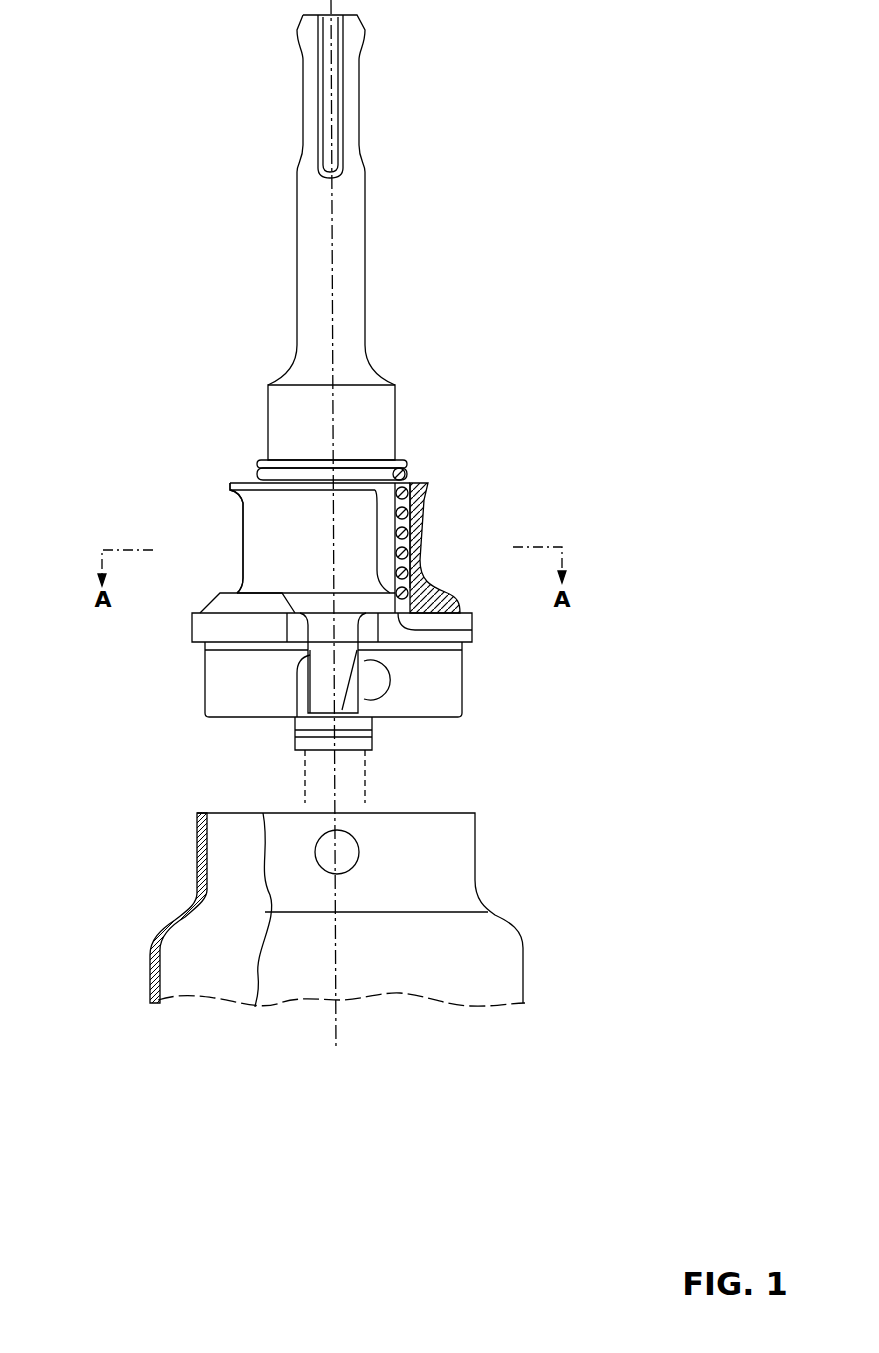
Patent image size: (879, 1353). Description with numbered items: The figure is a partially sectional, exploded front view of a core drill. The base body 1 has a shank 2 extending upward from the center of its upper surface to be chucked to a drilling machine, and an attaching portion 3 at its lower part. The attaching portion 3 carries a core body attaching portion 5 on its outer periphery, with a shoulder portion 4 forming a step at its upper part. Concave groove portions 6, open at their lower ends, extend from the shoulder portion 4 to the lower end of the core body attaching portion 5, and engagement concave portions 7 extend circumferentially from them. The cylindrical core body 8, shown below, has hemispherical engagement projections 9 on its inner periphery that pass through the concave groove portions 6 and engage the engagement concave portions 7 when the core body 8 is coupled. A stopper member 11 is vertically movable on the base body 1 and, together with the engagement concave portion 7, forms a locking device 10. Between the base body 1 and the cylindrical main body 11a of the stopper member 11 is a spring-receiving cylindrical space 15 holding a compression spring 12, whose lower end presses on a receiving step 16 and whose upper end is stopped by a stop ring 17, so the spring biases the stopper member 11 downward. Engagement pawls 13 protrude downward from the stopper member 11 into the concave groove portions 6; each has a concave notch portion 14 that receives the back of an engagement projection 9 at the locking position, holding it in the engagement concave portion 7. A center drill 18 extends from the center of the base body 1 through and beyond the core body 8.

The base body 1 is at (363, 480).
The shank 2 is at (352, 243).
The attaching portion 3 is at (207, 627).
The shoulder portion 4 is at (472, 641).
The core body attaching portion 5 is at (443, 690).
The concave groove portion 6 is at (298, 718).
The engagement concave portion 7 is at (380, 687).
The core body 8 is at (518, 923).
The engagement projection 9 is at (322, 850).
The locking device 10 is at (229, 474).
The stopper member 11 is at (393, 517).
The cylindrical main body 11a is at (254, 525).
The compression spring 12 is at (424, 537).
The engagement pawl 13 is at (325, 670).
The concave notch portion 14 is at (348, 704).
The spring-receiving cylindrical space 15 is at (420, 545).
The receiving step 16 is at (473, 623).
The stop ring 17 is at (345, 463).
The center drill 18 is at (306, 767).